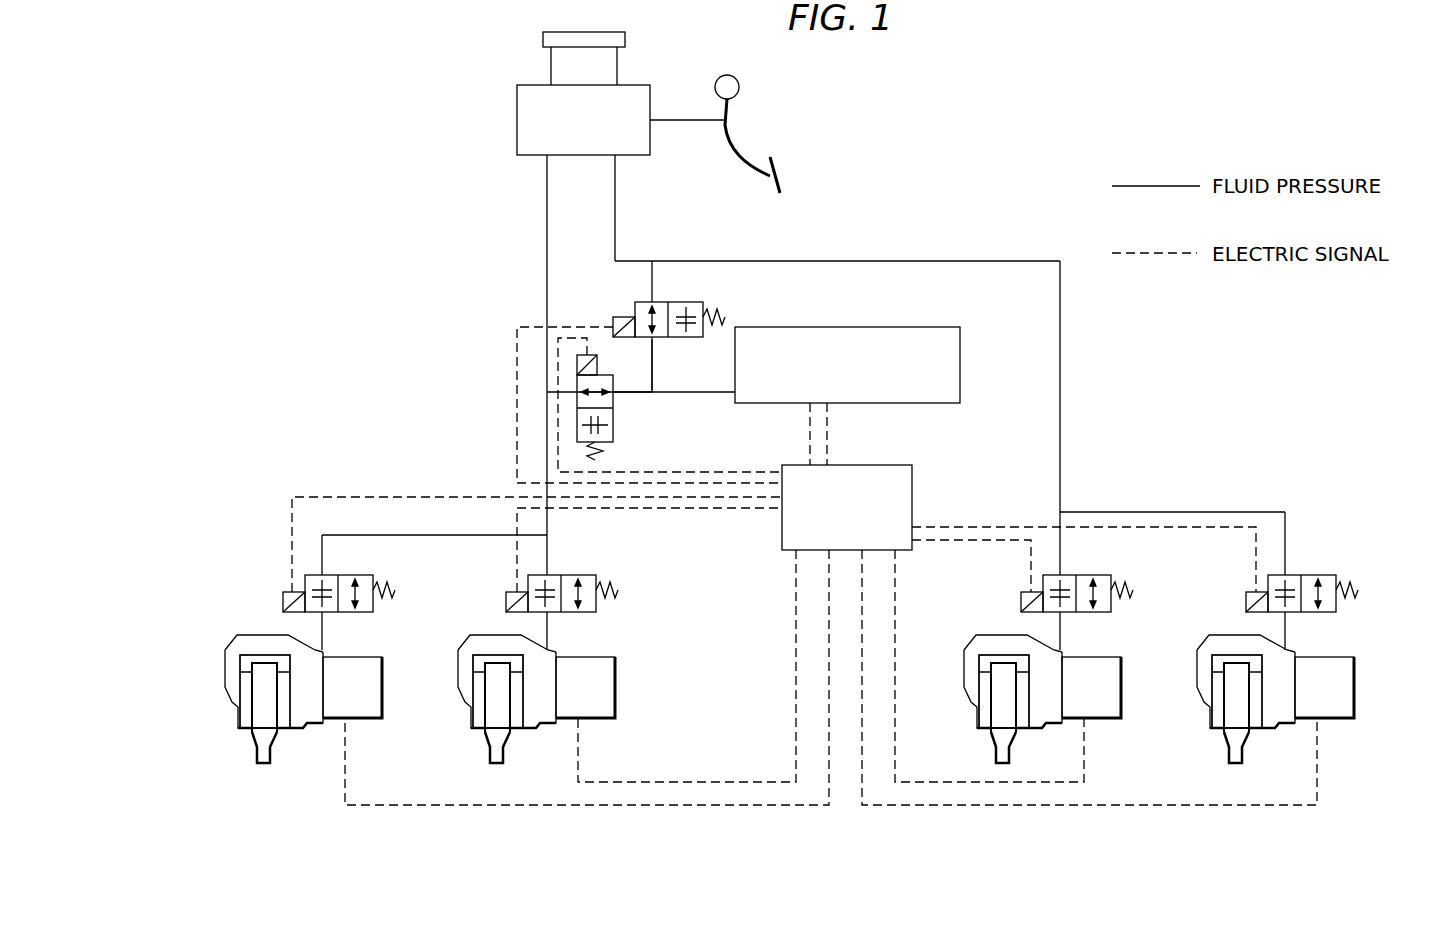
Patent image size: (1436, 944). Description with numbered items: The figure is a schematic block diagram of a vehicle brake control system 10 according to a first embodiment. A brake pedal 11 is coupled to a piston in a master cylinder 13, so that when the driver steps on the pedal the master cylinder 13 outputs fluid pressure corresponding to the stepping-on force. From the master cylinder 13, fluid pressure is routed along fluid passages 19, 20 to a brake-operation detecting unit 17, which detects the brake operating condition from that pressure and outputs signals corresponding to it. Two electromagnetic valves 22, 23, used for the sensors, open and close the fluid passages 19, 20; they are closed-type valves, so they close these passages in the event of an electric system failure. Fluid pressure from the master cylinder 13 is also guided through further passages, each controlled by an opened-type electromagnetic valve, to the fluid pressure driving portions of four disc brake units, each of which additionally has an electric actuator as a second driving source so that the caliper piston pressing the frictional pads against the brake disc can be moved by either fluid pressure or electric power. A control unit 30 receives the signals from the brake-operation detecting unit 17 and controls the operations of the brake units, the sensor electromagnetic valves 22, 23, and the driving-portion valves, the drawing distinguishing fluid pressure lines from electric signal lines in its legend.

The vehicle brake control system 10 is at (910, 200).
The brake pedal 11 is at (770, 160).
The master cylinder 13 is at (517, 118).
The brake-operation detecting unit 17 is at (960, 340).
The fluid passage 19 is at (627, 393).
The fluid passage 20 is at (652, 370).
The electromagnetic valve 22 is at (577, 432).
The electromagnetic valve 23 is at (677, 300).
The control unit 30 is at (912, 487).